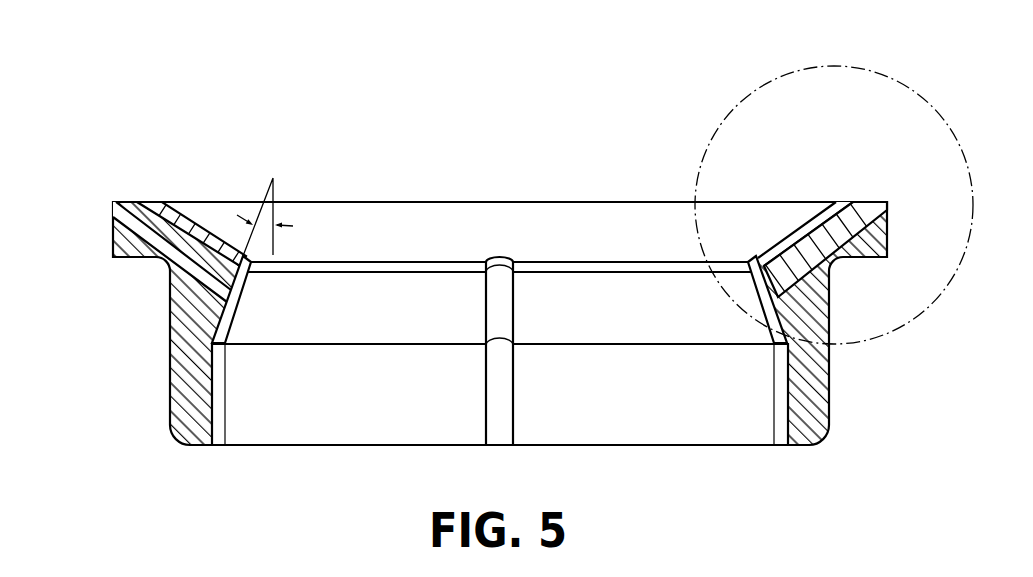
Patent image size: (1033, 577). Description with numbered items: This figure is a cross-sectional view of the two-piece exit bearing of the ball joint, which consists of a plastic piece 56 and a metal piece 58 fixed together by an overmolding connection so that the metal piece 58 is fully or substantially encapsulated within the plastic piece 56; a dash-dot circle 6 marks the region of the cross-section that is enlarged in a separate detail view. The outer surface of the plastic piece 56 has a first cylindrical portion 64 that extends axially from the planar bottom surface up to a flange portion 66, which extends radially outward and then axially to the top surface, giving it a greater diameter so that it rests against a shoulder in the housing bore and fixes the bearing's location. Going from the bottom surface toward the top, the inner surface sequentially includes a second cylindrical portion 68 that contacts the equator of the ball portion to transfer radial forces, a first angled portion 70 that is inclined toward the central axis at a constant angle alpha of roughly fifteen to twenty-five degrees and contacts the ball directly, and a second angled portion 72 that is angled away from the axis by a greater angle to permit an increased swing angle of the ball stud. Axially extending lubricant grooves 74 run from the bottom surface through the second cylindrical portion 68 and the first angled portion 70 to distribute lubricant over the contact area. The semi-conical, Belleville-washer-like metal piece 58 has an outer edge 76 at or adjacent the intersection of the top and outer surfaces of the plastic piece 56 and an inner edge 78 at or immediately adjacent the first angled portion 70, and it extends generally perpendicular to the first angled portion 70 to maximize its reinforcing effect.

The detail view circle (FIG. 6) 6 is at (937, 117).
The plastic piece 56 is at (836, 387).
The metal piece 58 is at (800, 231).
The first cylindrical portion 64 is at (170, 380).
The flange portion 66 is at (112, 235).
The second cylindrical portion 68 is at (772, 408).
The first angled portion 70 is at (223, 308).
The second angled portion 72 is at (207, 227).
The lubricant grooves 74 is at (495, 303).
The outer edge 76 is at (887, 216).
The inner edge 78 is at (760, 313).